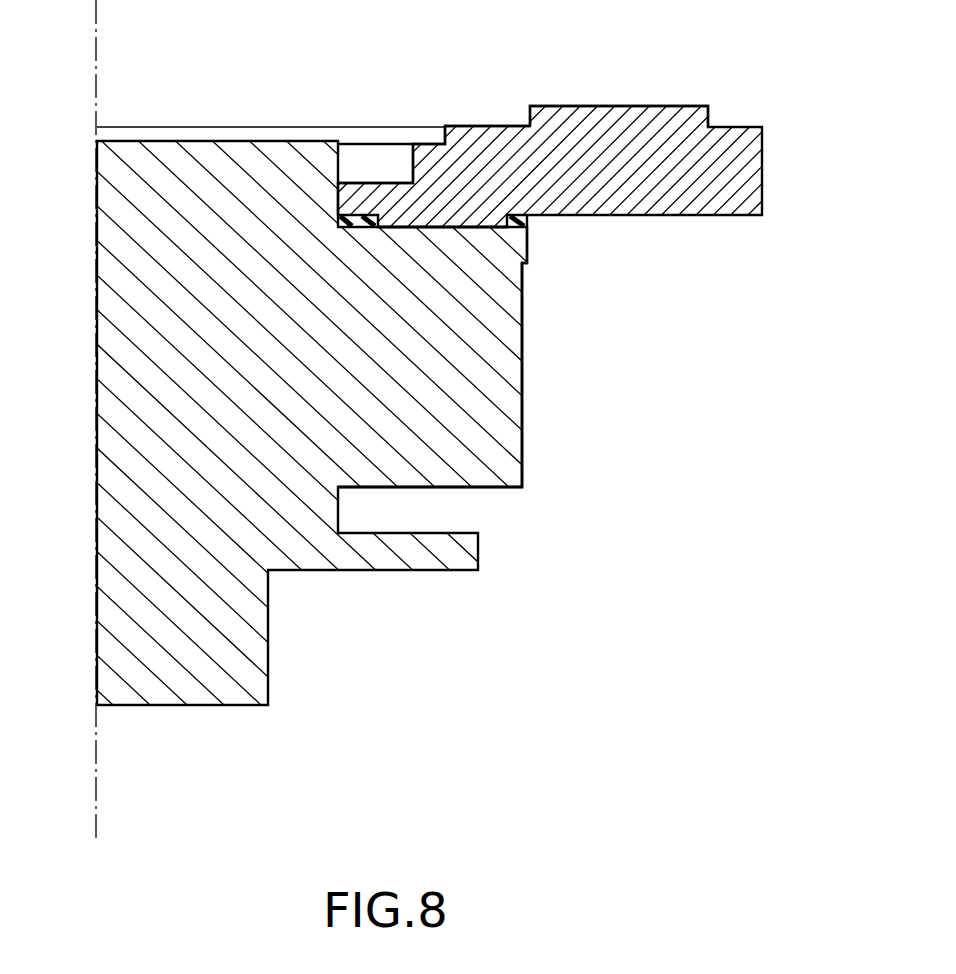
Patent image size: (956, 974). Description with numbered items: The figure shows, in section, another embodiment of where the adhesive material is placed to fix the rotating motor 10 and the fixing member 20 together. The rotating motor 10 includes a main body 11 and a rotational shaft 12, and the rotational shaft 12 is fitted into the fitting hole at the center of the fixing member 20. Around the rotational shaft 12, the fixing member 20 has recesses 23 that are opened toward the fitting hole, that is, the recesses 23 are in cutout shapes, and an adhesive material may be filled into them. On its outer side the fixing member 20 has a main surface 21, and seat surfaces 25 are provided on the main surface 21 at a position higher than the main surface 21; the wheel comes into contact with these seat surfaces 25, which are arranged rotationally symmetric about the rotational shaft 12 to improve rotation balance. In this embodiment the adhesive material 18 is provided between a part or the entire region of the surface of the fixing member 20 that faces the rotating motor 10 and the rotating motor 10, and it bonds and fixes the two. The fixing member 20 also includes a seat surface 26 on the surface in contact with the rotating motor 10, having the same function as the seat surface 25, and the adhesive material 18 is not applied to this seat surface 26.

The rotating motor 10 is at (522, 468).
The main body 11 is at (510, 399).
The rotational shaft 12 is at (205, 150).
The adhesive material 18 is at (528, 218).
The fixing member 20 is at (753, 128).
The main surface 21 is at (490, 125).
The recess 23 is at (381, 157).
The seat surface 25 is at (633, 105).
The seat surface 26 is at (434, 233).